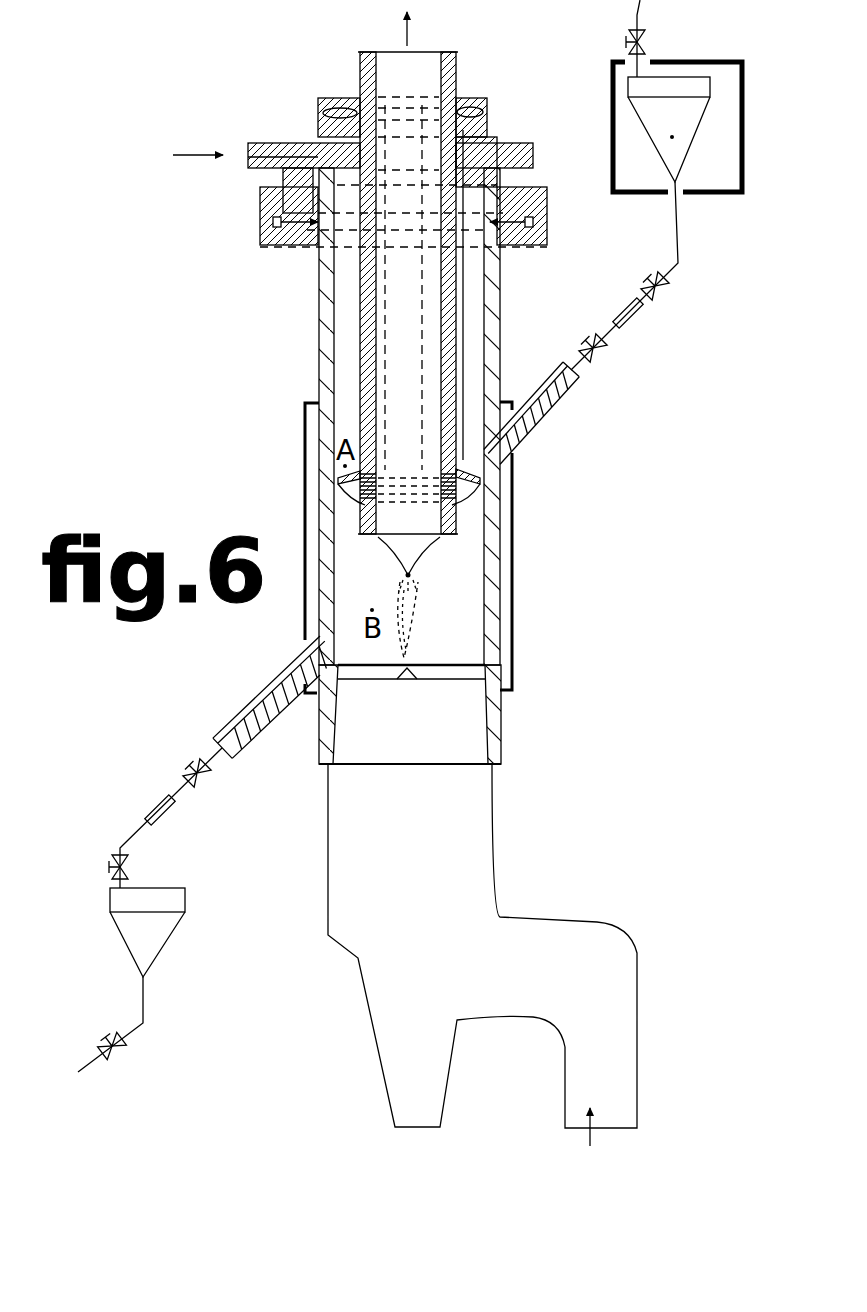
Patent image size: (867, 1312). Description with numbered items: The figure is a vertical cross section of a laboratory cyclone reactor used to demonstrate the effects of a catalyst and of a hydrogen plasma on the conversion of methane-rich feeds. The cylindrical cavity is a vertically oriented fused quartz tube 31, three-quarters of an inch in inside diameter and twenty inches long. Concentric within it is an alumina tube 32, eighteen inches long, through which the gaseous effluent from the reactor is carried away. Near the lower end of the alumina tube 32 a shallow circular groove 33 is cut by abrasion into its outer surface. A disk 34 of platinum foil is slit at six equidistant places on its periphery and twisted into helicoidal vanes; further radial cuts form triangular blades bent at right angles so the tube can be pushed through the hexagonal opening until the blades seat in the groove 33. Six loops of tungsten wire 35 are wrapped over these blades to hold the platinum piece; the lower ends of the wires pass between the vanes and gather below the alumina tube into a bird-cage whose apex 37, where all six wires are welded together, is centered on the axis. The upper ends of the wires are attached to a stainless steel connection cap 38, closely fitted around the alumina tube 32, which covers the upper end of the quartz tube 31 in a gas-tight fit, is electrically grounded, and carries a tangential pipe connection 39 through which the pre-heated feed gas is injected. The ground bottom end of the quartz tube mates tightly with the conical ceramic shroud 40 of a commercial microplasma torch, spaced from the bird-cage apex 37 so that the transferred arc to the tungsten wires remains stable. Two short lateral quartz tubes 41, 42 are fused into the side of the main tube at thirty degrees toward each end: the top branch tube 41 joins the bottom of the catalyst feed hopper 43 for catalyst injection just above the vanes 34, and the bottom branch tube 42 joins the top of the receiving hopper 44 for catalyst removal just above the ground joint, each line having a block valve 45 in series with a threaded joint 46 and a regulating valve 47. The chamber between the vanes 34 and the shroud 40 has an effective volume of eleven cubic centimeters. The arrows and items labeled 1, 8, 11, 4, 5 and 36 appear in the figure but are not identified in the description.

The gas inlet 1 is at (194, 136).
The gas inlet 8 is at (194, 136).
The outlet 11 is at (444, 26).
The jacket 4 is at (515, 632).
The product stream 5 is at (412, 652).
The fused quartz tube 31 is at (500, 590).
The alumina tube 32 is at (370, 536).
The circular groove 33 is at (333, 505).
The disk 34 is at (333, 468).
The Tungsten wire 35 is at (478, 490).
The nozzle outlet 36 is at (445, 536).
The apex of the bird-cage 37 is at (436, 620).
The stainless steel connection cap 38 is at (533, 152).
The tangential pipe connection 39 is at (253, 168).
The ceramic shroud 40 is at (452, 722).
The lateral quartz tube 41 is at (535, 427).
The lateral quartz tube 42 is at (263, 690).
The stainless steel hopper 43 is at (668, 160).
The stainless steel hopper 44 is at (160, 940).
The block valve 45 is at (600, 360).
The threaded joint 46 is at (635, 330).
The regulating valve 47 is at (662, 287).